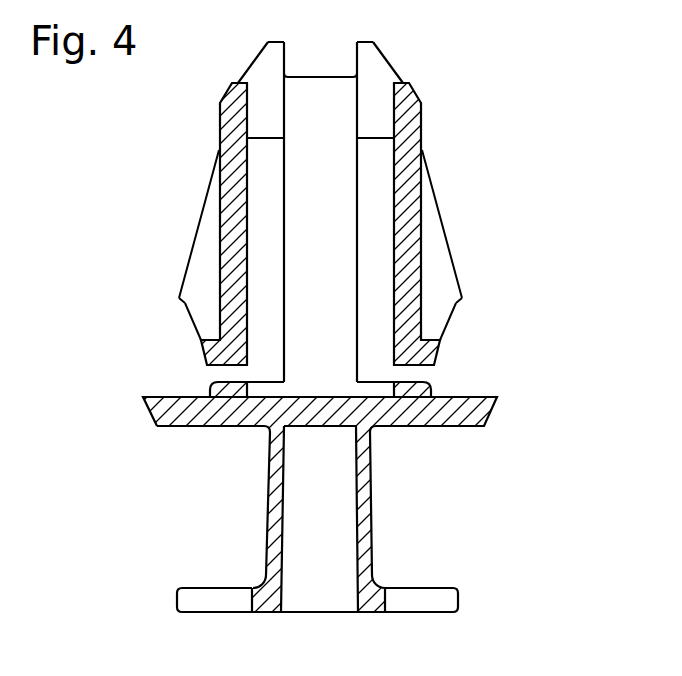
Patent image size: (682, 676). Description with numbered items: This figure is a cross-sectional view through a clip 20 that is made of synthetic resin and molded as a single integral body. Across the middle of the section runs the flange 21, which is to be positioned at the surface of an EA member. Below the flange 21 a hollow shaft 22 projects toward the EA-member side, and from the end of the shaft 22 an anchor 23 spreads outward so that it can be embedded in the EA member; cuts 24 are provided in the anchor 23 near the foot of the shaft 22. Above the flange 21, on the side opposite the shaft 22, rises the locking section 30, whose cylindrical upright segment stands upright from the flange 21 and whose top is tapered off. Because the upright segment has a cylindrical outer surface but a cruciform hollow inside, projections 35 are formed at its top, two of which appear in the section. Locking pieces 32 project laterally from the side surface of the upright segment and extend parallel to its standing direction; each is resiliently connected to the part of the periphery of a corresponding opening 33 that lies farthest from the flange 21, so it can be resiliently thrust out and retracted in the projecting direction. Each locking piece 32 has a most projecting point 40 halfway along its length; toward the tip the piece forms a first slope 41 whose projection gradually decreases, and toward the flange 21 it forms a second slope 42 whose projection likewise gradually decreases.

The clip 20 is at (524, 137).
The flange 21 is at (493, 414).
The shaft 22 is at (370, 503).
The anchor 23 is at (462, 598).
The cuts 24 is at (250, 598).
The locking section 30 is at (436, 116).
The locking pieces 32 is at (166, 232).
The openings 33 is at (232, 373).
The projections 35 is at (264, 57).
The most projecting point 40 is at (178, 298).
The first slope 41 is at (200, 211).
The second slope 42 is at (183, 327).